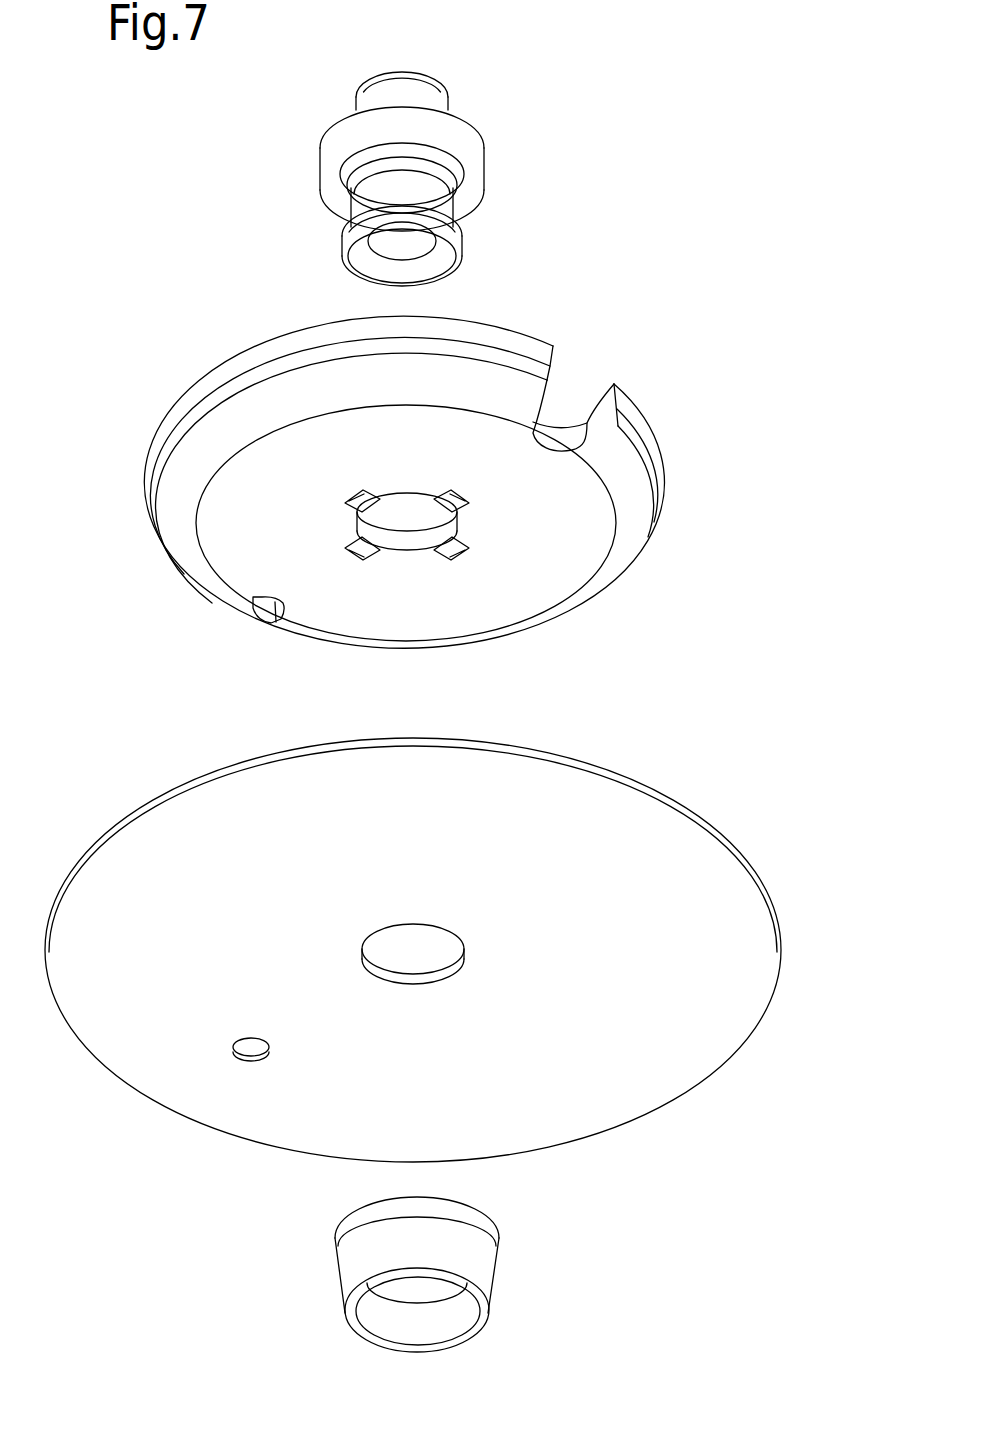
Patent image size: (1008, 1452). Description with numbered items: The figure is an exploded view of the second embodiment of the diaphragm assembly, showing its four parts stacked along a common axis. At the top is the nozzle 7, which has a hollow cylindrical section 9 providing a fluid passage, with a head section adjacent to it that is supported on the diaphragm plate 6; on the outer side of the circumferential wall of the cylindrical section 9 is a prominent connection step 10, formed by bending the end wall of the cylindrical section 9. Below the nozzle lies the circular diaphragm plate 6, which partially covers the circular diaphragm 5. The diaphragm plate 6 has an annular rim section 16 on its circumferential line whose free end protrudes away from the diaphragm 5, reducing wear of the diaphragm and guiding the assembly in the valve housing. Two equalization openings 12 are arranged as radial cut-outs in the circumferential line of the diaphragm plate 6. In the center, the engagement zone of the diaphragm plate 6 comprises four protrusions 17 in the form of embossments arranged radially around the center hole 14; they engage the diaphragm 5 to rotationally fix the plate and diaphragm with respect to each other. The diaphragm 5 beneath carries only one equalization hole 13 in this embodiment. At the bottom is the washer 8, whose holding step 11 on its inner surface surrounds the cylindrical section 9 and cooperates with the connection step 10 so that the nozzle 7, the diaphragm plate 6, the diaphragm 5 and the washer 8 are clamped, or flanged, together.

The diaphragm 5 is at (679, 1055).
The diaphragm plate 6 is at (566, 554).
The nozzle 7 is at (457, 105).
The washer 8 is at (358, 1262).
The cylindrical section 9 is at (427, 193).
The connection step 10 is at (340, 255).
The holding step 11 is at (462, 1302).
The equalization opening 12 is at (582, 388).
The equalization hole 13 is at (249, 1053).
The center hole 14 is at (408, 520).
The rim section 16 is at (525, 350).
The protrusions 17 is at (457, 552).